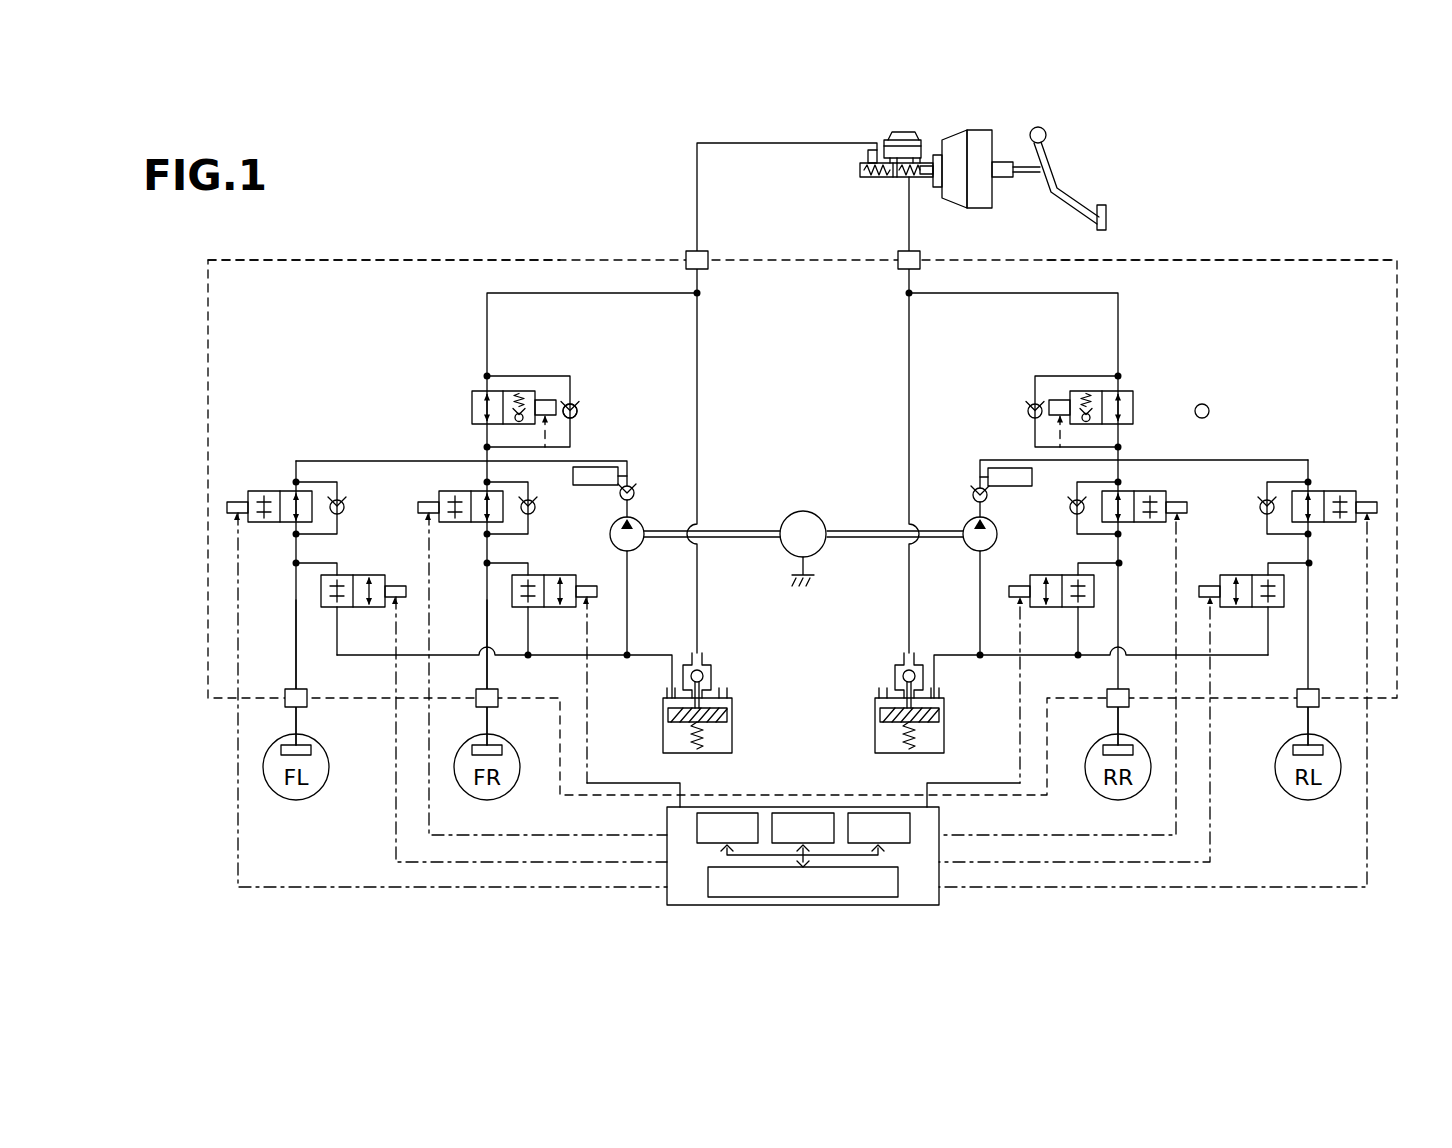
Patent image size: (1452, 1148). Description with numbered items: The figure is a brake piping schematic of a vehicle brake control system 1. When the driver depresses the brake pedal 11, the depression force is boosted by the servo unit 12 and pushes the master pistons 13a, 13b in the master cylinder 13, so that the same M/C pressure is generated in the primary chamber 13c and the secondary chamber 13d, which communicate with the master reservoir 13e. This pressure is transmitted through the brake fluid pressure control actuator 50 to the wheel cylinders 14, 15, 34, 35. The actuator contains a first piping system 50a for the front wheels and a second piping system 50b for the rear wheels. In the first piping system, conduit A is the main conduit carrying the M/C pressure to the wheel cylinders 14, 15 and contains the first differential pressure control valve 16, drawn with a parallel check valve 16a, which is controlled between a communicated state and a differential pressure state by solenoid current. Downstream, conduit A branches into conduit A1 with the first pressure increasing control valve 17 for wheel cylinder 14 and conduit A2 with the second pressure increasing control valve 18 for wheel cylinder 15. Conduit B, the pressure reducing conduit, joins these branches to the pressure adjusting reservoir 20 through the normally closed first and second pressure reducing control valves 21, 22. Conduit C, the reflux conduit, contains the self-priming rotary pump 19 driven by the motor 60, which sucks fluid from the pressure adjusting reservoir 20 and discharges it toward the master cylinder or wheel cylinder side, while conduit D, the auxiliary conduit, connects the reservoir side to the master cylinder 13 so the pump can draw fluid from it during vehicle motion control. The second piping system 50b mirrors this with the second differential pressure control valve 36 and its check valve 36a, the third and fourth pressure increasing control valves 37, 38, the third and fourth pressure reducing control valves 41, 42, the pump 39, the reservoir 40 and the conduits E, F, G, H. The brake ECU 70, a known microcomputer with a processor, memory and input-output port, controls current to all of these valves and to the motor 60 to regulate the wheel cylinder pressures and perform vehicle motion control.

The brake control system 1 is at (1168, 158).
The brake pedal 11 is at (1053, 160).
The servo unit 12 is at (975, 130).
The master cylinder 13 is at (887, 175).
The master piston 13a is at (890, 178).
The master piston 13b is at (926, 178).
The primary chamber 13c is at (870, 178).
The secondary chamber 13d is at (916, 178).
The master reservoir 13e is at (905, 132).
The wheel cylinder 14 is at (281, 750).
The wheel cylinder 15 is at (472, 750).
The first differential pressure control valve 16 is at (472, 407).
The check valve 16a is at (575, 405).
The first pressure increasing control valve 17 is at (266, 491).
The second pressure increasing control valve 18 is at (478, 490).
The self-priming rotary pump 19 is at (610, 534).
The pressure adjusting reservoir 20 is at (664, 741).
The first pressure reducing control valve 21 is at (344, 575).
The second pressure reducing control valve 22 is at (531, 575).
The wheel cylinder 34 is at (1344, 748).
The wheel cylinder 35 is at (1154, 748).
The second differential pressure control valve 36 is at (1103, 407).
The check valve 36a is at (1209, 412).
The third pressure increasing control valve 37 is at (1340, 491).
The fourth pressure increasing control valve 38 is at (1130, 490).
The pump 39 is at (997, 534).
The reservoir 40 is at (942, 741).
The third pressure reducing control valve 41 is at (1262, 575).
The fourth pressure reducing control valve 42 is at (1070, 575).
The brake fluid pressure control actuator 50 is at (1378, 258).
The first piping system 50a is at (281, 316).
The second piping system 50b is at (1325, 316).
The motor 60 is at (803, 511).
The brake ECU 70 is at (940, 812).
The conduit A is at (510, 293).
The conduit A1 is at (296, 628).
The conduit A2 is at (487, 613).
The conduit B is at (540, 657).
The conduit C is at (592, 461).
The conduit D is at (697, 318).
The conduit E is at (1097, 293).
The conduit F is at (1066, 657).
The conduit G is at (1010, 461).
The conduit H is at (909, 318).